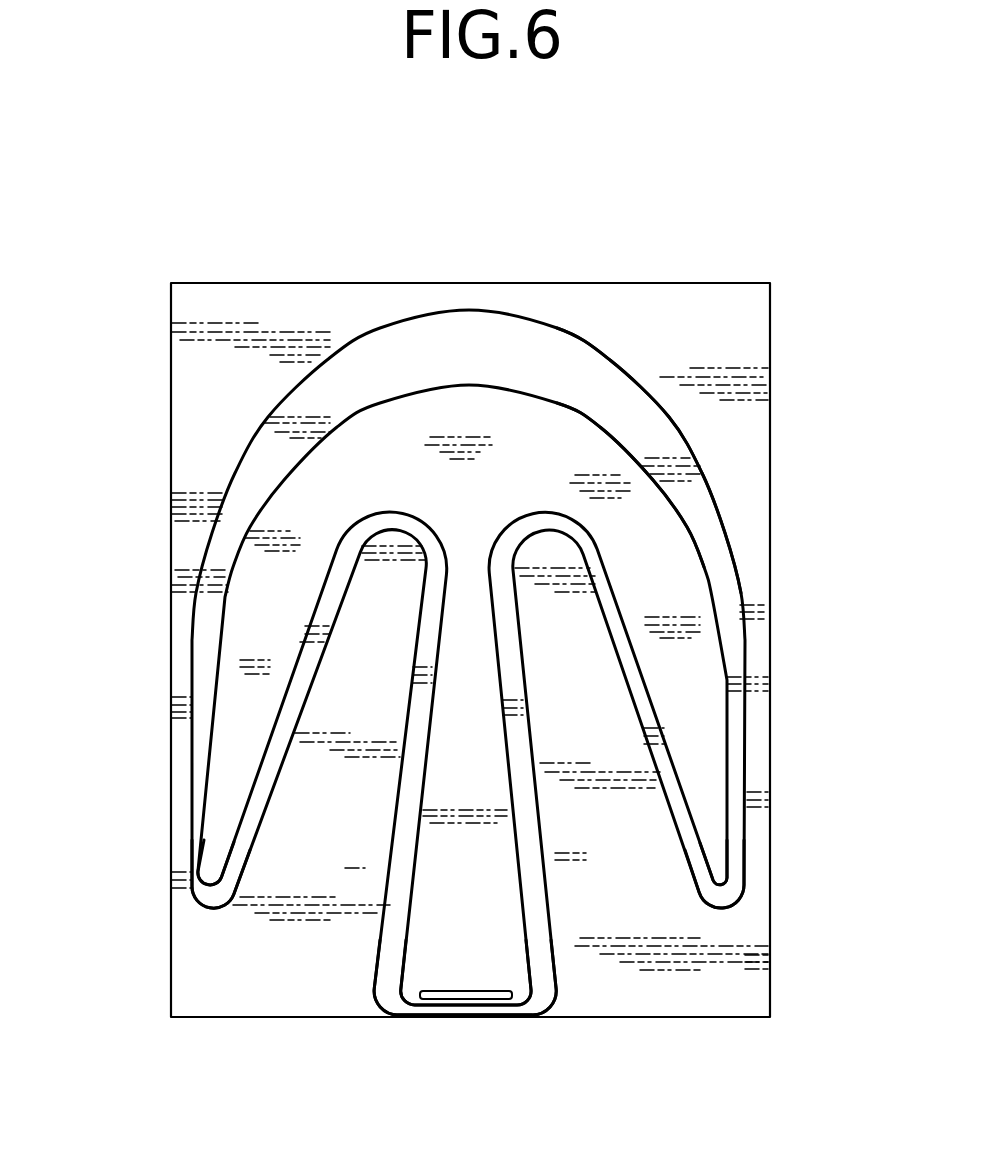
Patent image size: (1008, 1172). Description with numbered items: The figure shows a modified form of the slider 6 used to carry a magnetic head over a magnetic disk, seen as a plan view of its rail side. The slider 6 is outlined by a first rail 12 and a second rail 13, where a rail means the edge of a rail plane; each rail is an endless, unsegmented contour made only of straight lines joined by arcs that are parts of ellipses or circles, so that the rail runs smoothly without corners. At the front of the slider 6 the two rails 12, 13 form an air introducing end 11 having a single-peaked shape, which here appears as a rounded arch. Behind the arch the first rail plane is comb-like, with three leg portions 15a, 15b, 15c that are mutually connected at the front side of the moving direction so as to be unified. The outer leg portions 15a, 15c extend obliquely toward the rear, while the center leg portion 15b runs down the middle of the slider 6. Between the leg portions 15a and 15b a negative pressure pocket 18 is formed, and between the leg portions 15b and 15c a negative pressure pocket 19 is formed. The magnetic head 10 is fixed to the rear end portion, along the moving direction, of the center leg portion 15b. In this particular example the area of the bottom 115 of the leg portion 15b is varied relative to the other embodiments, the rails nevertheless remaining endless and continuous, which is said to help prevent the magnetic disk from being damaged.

The slider 6 is at (822, 258).
The air introducing end 11 is at (503, 258).
The first rail 12 is at (673, 507).
The second rail 13 is at (668, 418).
The leg portion 15a is at (201, 909).
The leg portion 15b is at (498, 947).
The leg portion 15c is at (707, 747).
The magnetic head 10 is at (447, 1000).
The bottom of the leg portion 115 is at (478, 1017).
The negative pressure pocket 18 is at (310, 890).
The negative pressure pocket 19 is at (628, 897).